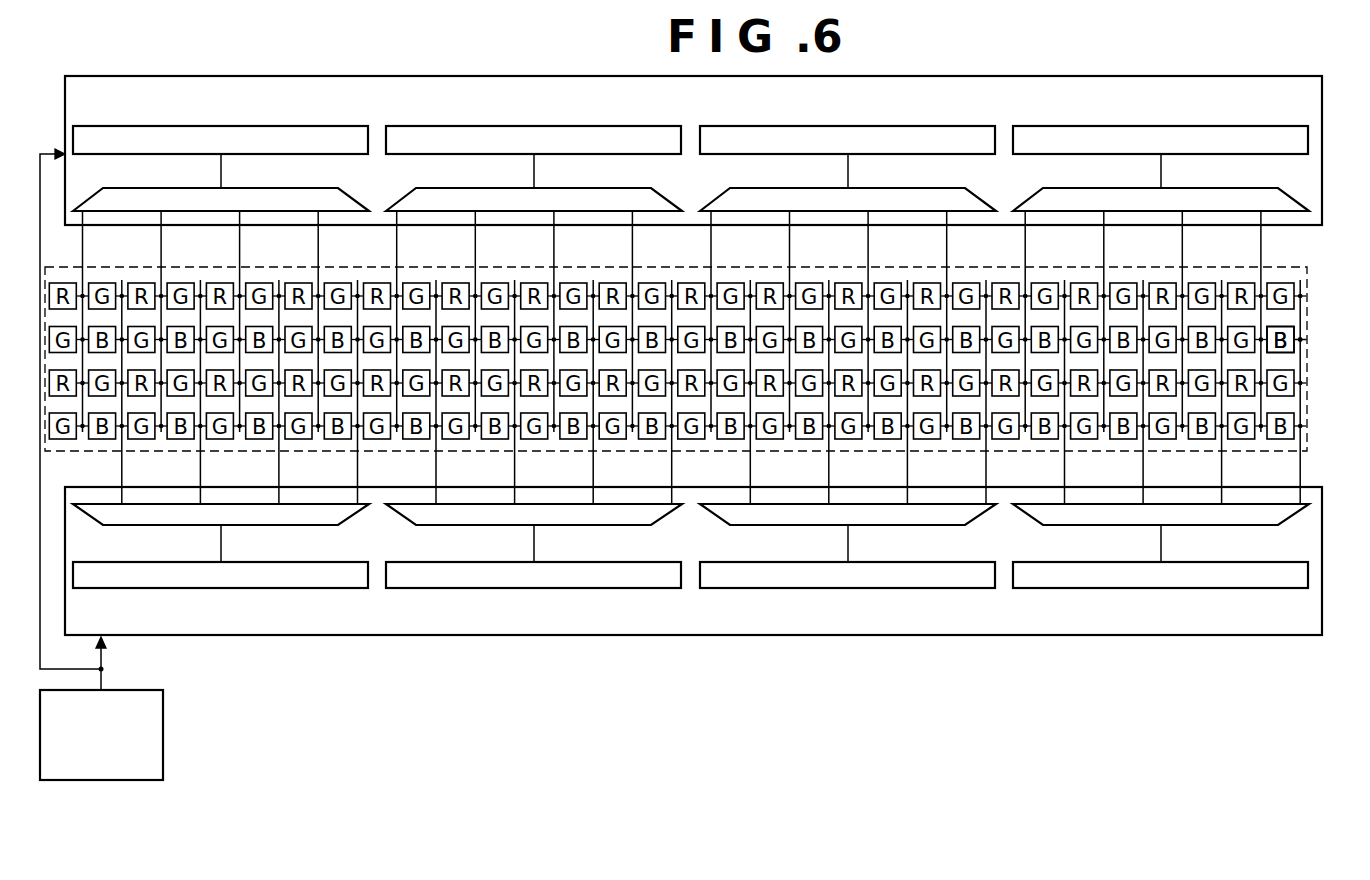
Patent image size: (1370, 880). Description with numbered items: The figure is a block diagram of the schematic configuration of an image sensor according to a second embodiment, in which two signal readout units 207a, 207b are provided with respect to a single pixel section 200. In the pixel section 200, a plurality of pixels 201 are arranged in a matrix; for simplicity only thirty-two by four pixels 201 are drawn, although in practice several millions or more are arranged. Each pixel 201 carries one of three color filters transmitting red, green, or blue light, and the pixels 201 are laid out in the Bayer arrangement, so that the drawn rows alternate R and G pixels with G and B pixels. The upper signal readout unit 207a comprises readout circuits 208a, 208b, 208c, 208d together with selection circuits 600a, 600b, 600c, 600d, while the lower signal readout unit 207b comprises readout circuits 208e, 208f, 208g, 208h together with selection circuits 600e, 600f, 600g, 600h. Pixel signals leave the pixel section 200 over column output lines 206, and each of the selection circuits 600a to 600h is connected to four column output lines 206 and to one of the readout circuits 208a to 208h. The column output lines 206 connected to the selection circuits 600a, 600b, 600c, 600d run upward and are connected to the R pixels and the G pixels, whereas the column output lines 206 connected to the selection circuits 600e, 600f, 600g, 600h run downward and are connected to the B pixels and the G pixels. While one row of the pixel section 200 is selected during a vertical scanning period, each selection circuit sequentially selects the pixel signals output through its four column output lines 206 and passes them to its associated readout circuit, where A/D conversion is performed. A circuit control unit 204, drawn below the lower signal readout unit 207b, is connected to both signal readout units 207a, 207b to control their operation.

The pixel section 200 is at (698, 346).
The pixel 201 is at (1283, 327).
The circuit control unit 204 is at (163, 714).
The column output line 206 is at (1300, 472).
The signal readout unit 207a is at (1200, 77).
The signal readout unit 207b is at (1172, 636).
The readout circuit 208a is at (150, 126).
The readout circuit 208b is at (418, 126).
The readout circuit 208c is at (898, 126).
The readout circuit 208d is at (1223, 126).
The readout circuit 208e is at (293, 589).
The readout circuit 208f is at (408, 589).
The readout circuit 208g is at (923, 589).
The readout circuit 208h is at (1221, 589).
The selection circuit 600a is at (295, 188).
The selection circuit 600b is at (608, 188).
The selection circuit 600c is at (920, 188).
The selection circuit 600d is at (1223, 188).
The selection circuit 600e is at (293, 527).
The selection circuit 600f is at (612, 527).
The selection circuit 600g is at (918, 527).
The selection circuit 600h is at (1221, 527).